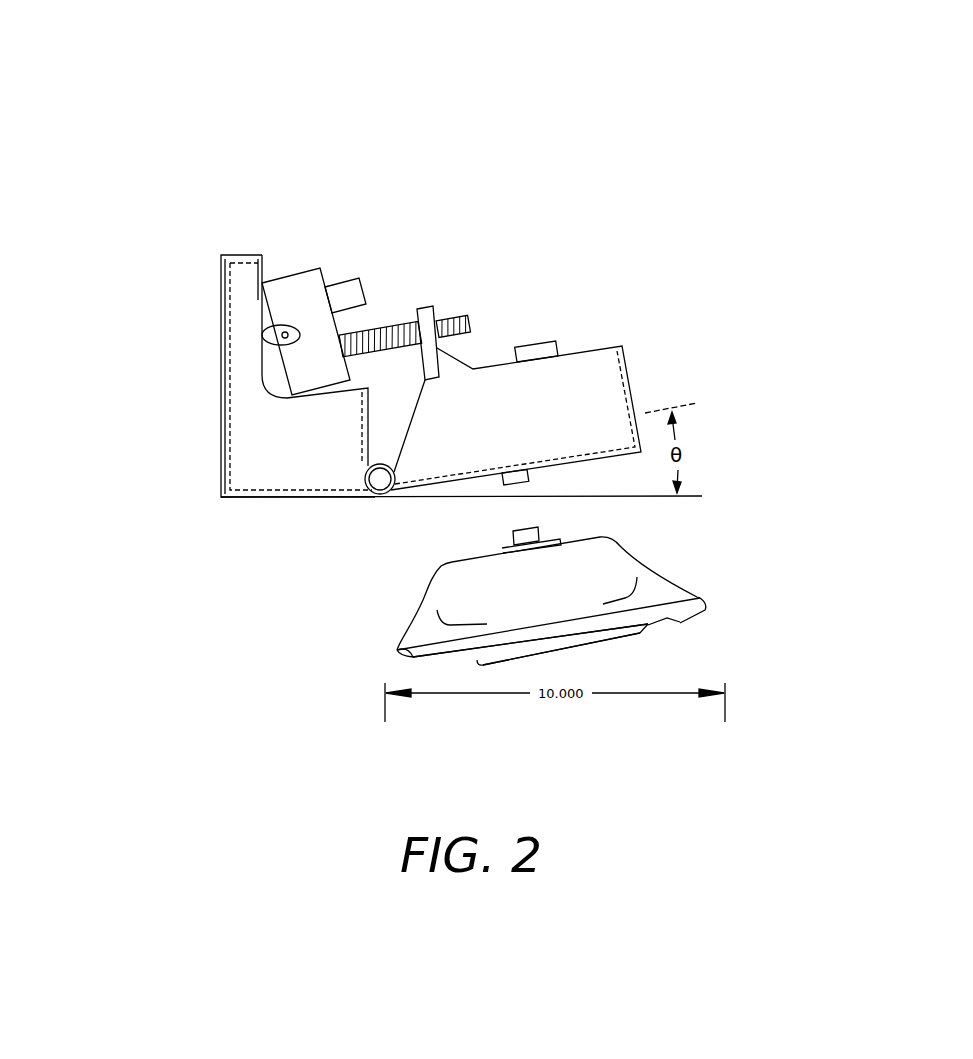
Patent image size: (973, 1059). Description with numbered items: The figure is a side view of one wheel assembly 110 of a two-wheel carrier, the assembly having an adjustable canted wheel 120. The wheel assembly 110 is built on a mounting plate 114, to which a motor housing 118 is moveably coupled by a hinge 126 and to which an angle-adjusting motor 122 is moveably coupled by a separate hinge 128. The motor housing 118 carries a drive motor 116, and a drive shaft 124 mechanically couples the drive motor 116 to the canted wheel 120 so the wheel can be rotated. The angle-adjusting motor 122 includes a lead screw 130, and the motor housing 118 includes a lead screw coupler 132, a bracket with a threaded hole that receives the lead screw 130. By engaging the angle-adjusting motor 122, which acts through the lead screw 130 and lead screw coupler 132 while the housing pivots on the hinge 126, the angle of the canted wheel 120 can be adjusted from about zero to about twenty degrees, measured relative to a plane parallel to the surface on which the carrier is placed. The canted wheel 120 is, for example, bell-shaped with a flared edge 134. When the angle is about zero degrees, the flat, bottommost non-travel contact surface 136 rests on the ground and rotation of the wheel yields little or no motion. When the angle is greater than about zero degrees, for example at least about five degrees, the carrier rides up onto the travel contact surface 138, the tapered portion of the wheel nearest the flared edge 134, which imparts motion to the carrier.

The wheel assembly 110 is at (198, 108).
The mounting plate 114 is at (345, 464).
The drive motor 116 is at (545, 340).
The motor housing 118 is at (588, 437).
The canted wheel 120 is at (592, 608).
The angle-adjusting motor 122 is at (287, 272).
The drive shaft 124 is at (513, 529).
The hinge 126 is at (367, 493).
The hinge 128 is at (267, 347).
The lead screw 130 is at (462, 315).
The lead screw coupler 132 is at (427, 309).
The flared edge 134 is at (397, 650).
The non-travel contact surface 136 is at (598, 645).
The travel contact surface 138 is at (680, 623).